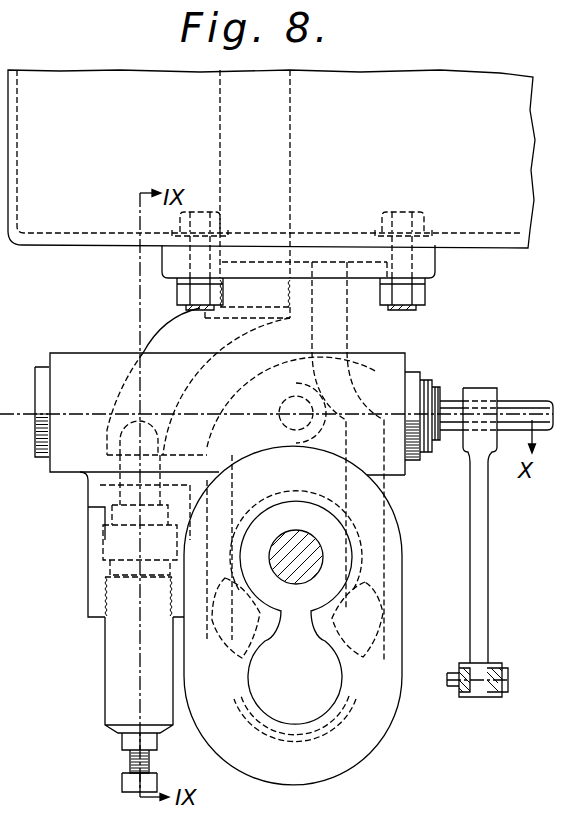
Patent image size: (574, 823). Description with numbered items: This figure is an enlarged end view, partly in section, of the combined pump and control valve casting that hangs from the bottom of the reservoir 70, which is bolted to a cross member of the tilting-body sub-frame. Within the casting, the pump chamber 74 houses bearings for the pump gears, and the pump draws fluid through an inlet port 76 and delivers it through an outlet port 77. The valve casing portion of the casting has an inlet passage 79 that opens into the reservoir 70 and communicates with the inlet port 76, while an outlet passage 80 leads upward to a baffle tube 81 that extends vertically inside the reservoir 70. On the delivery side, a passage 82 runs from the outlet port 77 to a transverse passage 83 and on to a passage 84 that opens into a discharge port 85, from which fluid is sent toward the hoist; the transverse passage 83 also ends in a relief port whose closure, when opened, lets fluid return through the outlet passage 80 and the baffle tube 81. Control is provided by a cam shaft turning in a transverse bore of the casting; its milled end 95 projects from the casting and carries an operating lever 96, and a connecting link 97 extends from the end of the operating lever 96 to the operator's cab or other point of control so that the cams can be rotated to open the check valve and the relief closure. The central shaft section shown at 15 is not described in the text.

The reservoir 70 is at (93, 82).
The baffle tube 81 is at (292, 133).
The inlet passage 79 is at (346, 323).
The outlet passage 80 is at (177, 338).
The passage 84 is at (258, 389).
The discharge port 85 is at (307, 402).
The transverse passage 83 is at (127, 487).
The pump chamber 74 is at (359, 537).
The shaft 15 is at (308, 559).
The outlet port 77 is at (223, 640).
The inlet port 76 is at (376, 621).
The passage 82 is at (243, 486).
The milled end 95 is at (522, 397).
The operating lever 96 is at (488, 538).
The connecting link 97 is at (463, 688).